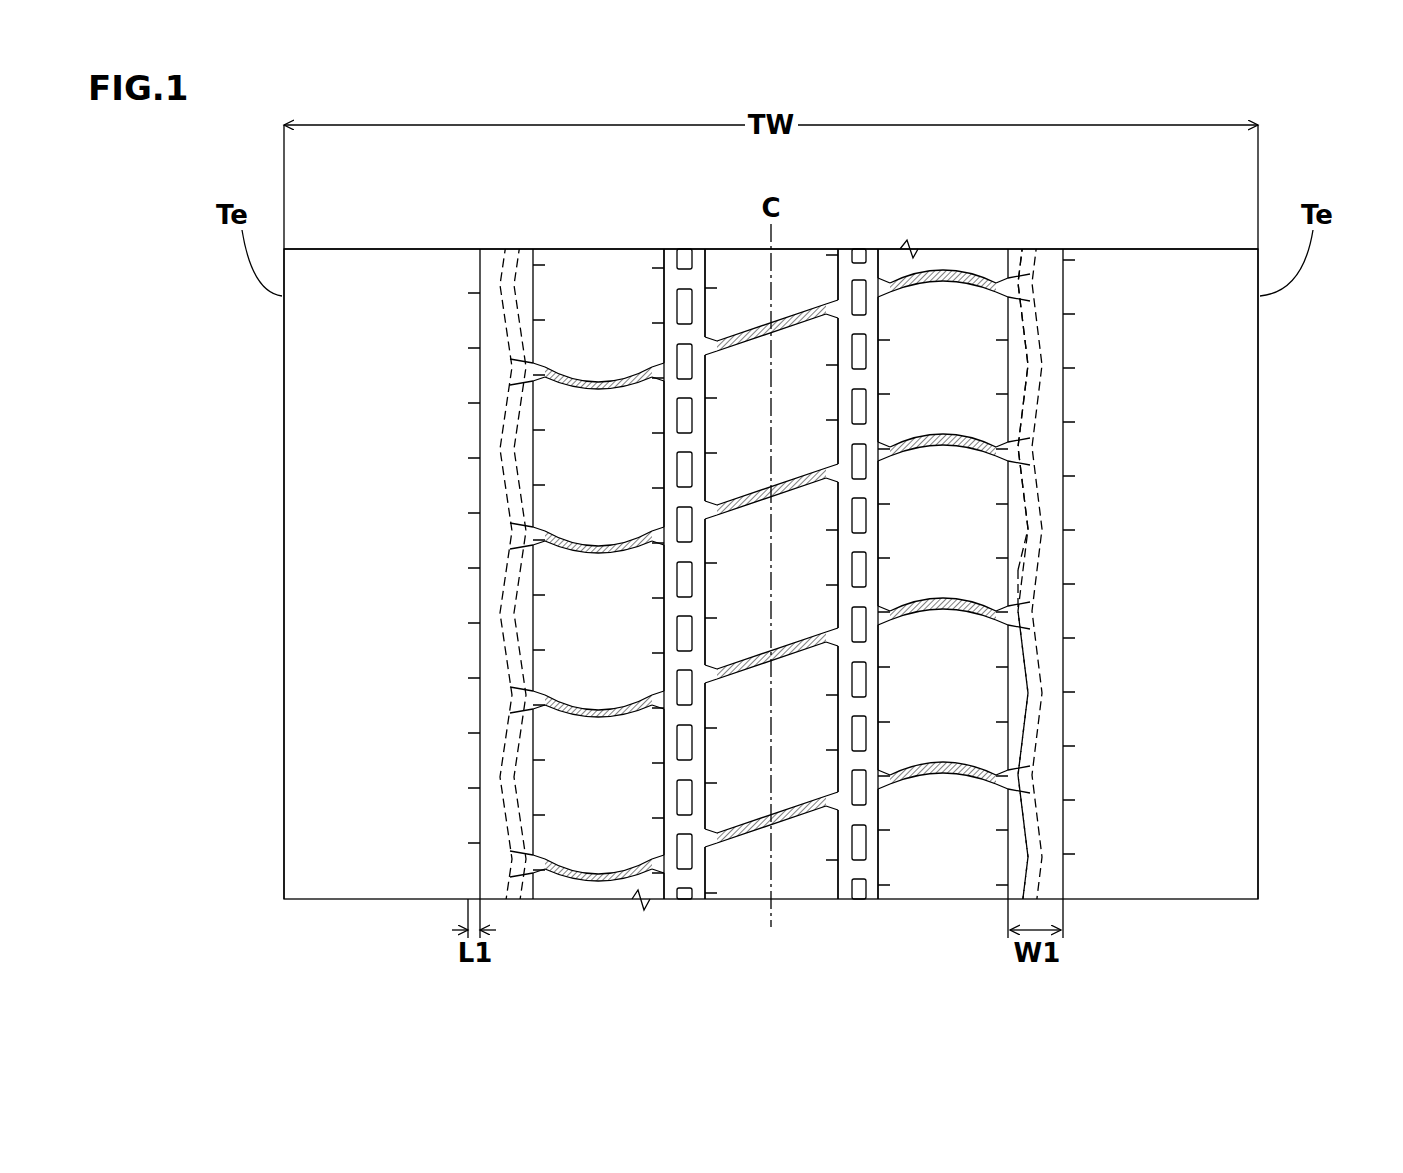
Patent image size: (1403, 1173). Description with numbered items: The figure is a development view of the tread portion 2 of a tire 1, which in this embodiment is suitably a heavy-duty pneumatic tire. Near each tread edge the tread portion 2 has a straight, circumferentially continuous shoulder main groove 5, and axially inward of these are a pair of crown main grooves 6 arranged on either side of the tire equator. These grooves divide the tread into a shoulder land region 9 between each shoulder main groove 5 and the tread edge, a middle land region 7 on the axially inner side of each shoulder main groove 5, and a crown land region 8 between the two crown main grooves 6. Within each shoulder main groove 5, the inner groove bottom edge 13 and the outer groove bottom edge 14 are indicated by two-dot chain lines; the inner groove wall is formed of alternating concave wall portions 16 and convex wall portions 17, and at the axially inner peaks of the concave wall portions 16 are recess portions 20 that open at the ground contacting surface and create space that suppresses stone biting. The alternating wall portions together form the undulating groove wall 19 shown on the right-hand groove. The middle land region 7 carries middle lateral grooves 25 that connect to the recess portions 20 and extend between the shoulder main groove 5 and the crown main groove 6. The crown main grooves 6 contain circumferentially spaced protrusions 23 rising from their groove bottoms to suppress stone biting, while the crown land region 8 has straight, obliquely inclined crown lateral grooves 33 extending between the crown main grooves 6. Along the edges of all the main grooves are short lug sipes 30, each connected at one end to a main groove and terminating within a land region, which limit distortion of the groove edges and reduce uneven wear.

The tire 1 is at (798, 245).
The tread portion 2 is at (980, 245).
The shoulder main groove 5 is at (490, 280).
The crown main groove 6 is at (698, 285).
The middle land region 7 is at (590, 300).
The crown land region 8 is at (742, 285).
The shoulder land region 9 is at (372, 310).
The inner groove bottom edge 13 is at (517, 440).
The outer groove bottom edge 14 is at (510, 365).
The concave wall portion 16 is at (1008, 612).
The convex wall portion 17 is at (1015, 535).
The zigzag groove bottom 19 is at (1205, 570).
The recess portion 20 is at (533, 535).
The protrusion 23 is at (686, 850).
The middle lateral groove 25 is at (600, 545).
The lug sipe 30 is at (475, 563).
The crown lateral groove 33 is at (785, 818).